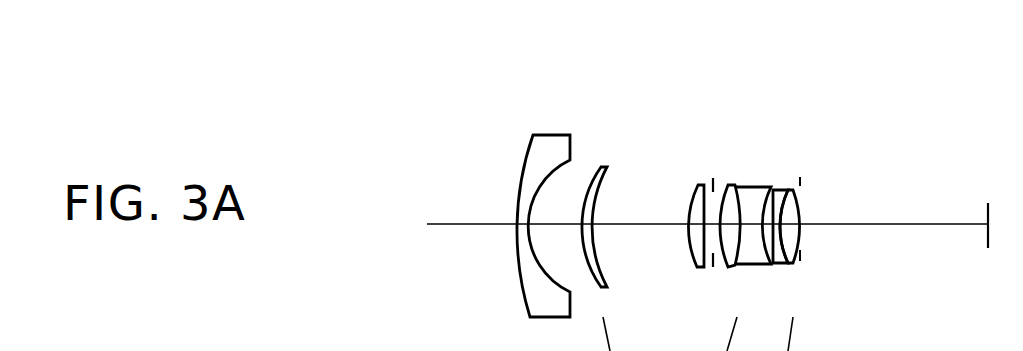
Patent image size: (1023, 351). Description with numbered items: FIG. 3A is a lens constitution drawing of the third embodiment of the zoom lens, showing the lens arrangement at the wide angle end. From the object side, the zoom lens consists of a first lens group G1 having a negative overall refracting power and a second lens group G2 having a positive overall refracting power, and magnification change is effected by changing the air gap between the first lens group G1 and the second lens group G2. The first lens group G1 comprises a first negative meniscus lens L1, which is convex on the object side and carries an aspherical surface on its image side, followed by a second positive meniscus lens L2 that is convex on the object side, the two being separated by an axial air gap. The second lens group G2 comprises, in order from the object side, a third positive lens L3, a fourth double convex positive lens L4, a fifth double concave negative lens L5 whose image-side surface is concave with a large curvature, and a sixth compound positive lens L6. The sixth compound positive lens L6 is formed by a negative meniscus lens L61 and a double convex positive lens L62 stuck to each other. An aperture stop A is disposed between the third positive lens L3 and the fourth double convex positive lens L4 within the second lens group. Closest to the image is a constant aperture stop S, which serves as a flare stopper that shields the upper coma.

The first lens group G1 is at (632, 78).
The second lens group G2 is at (833, 92).
The first negative meniscus lens L1 is at (550, 145).
The second positive meniscus lens L2 is at (602, 165).
The third positive lens L3 is at (700, 183).
The fourth double convex positive lens L4 is at (728, 185).
The fifth double concave negative lens L5 is at (753, 187).
The sixth compound positive lens L6 is at (788, 189).
The negative meniscus lens L61 is at (775, 263).
The double convex positive lens L62 is at (797, 235).
The aperture stop A is at (713, 178).
The constant aperture stop S is at (809, 214).